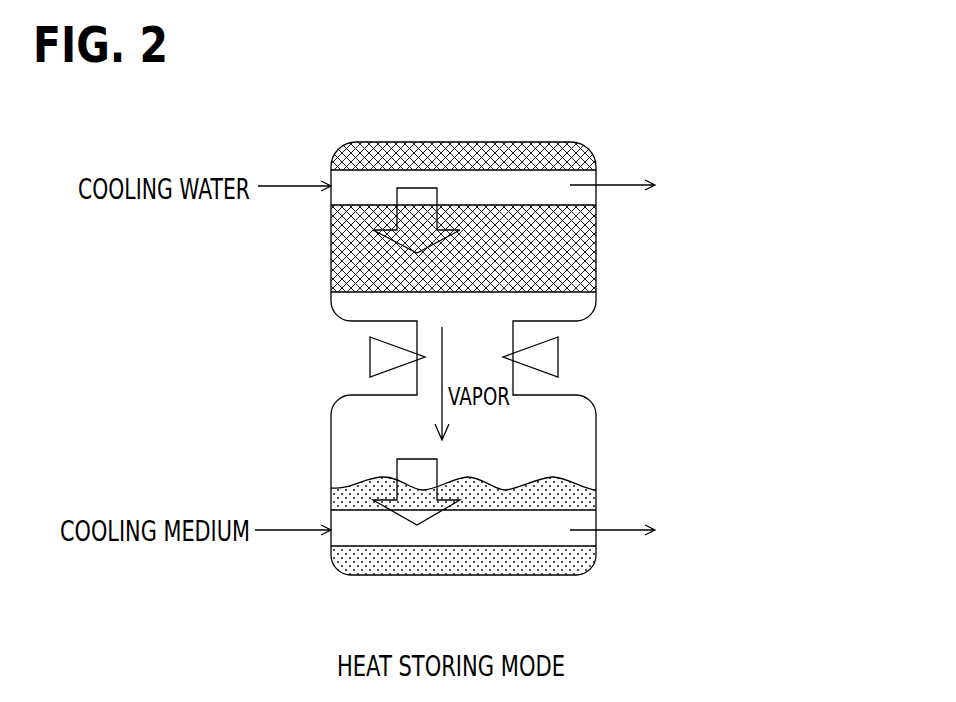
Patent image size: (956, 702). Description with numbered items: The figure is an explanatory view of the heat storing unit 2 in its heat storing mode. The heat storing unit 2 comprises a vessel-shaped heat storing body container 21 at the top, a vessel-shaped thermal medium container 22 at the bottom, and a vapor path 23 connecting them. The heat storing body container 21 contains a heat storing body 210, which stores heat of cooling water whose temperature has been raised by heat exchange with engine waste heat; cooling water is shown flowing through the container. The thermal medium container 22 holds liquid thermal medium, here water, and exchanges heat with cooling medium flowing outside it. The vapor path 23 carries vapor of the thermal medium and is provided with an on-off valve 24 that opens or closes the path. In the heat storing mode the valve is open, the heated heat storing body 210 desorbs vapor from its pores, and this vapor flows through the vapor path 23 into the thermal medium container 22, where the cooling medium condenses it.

The heat storing unit 2 is at (611, 408).
The heat storing body container 21 is at (412, 142).
The heat storing body 210 is at (596, 245).
The thermal medium container 22 is at (445, 575).
The vapor path 23 is at (415, 381).
The on-off valve 24 is at (560, 343).